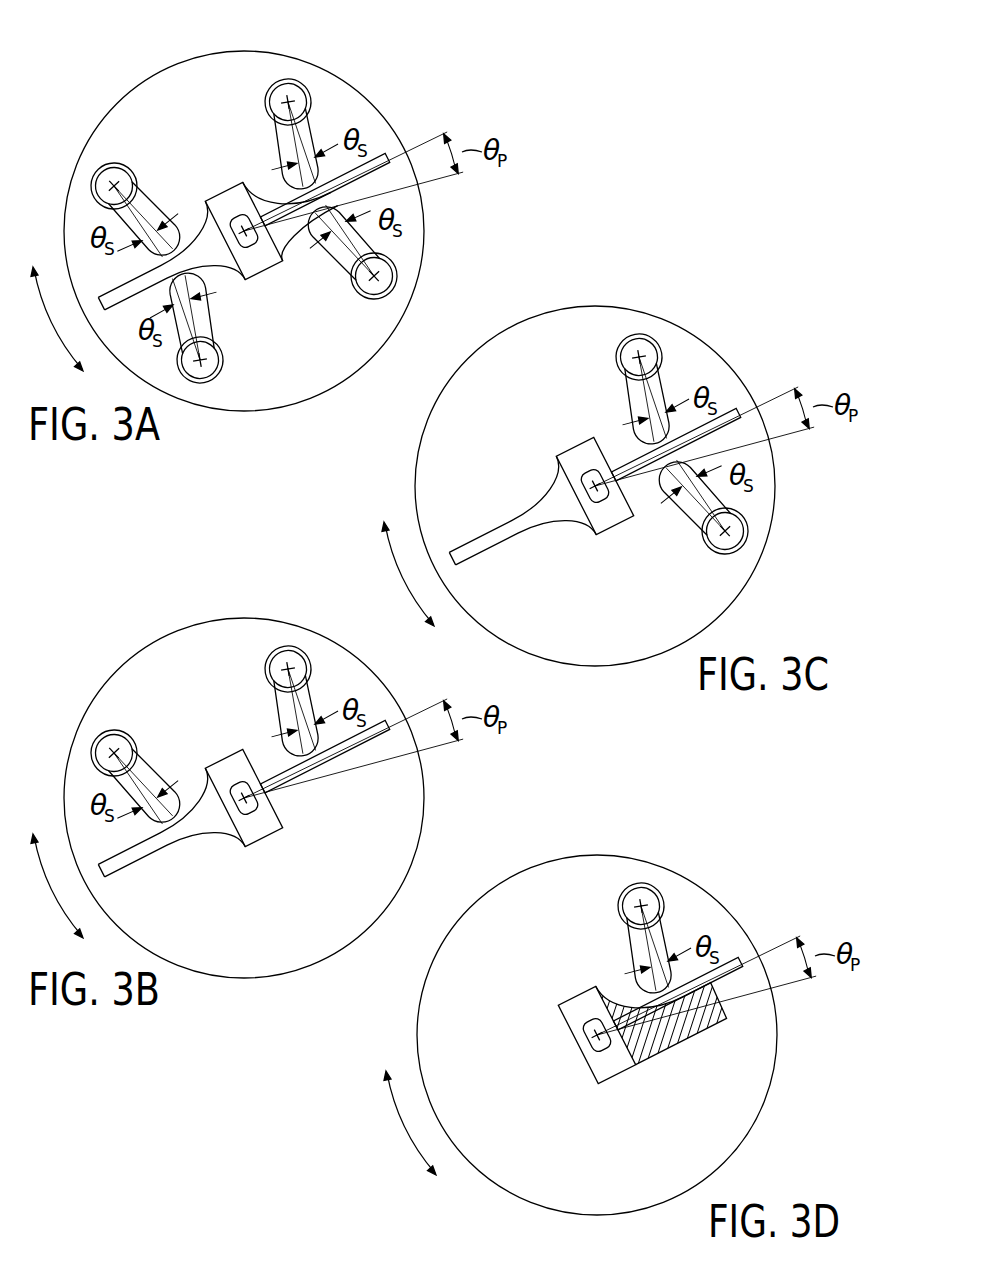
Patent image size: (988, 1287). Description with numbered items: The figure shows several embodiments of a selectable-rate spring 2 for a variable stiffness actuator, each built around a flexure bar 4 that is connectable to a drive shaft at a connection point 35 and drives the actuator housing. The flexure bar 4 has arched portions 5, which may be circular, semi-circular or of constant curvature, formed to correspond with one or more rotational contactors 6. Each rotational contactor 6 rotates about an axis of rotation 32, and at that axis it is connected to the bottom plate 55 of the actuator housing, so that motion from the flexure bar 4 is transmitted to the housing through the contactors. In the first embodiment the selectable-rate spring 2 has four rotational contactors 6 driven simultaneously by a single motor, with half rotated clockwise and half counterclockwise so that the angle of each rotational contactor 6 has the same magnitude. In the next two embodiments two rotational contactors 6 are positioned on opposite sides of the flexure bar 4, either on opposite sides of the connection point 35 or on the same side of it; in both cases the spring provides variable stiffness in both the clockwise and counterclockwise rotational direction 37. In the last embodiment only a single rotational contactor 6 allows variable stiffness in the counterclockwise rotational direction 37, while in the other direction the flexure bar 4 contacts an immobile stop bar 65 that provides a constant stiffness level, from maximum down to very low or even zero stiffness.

In FIG. 3A, the selectable-rate spring 2 is at (425, 49).
In FIG. 3B, the selectable-rate spring 2 is at (91, 576).
In FIG. 3C, the selectable-rate spring 2 is at (775, 272).
In FIG. 3D, the selectable-rate spring 2 is at (790, 852).
In FIG. 3A, the flexure bar 4 is at (336, 185).
In FIG. 3B, the flexure bar 4 is at (273, 784).
In FIG. 3C, the flexure bar 4 is at (624, 472).
In FIG. 3D, the flexure bar 4 is at (678, 989).
In FIG. 3A, the arched portion 5 is at (214, 232).
In FIG. 3A, the rotational contactor 6 is at (273, 200).
In FIG. 3B, the rotational contactor 6 is at (213, 741).
In FIG. 3C, the rotational contactor 6 is at (663, 466).
In FIG. 3D, the rotational contactor 6 is at (630, 948).
In FIG. 3A, the axis of rotation 32 is at (247, 207).
In FIG. 3B, the axis of rotation 32 is at (170, 679).
In FIG. 3C, the axis of rotation 32 is at (715, 419).
In FIG. 3D, the axis of rotation 32 is at (649, 877).
In FIG. 3A, the connection point 35 is at (266, 276).
In FIG. 3B, the connection point 35 is at (260, 839).
In FIG. 3C, the connection point 35 is at (611, 524).
In FIG. 3D, the connection point 35 is at (570, 1053).
In FIG. 3A, the rotational direction 37 is at (50, 319).
In FIG. 3B, the rotational direction 37 is at (50, 886).
In FIG. 3C, the rotational direction 37 is at (401, 574).
In FIG. 3D, the rotational direction 37 is at (403, 1123).
In FIG. 3A, the bottom plate 55 is at (69, 141).
In FIG. 3B, the bottom plate 55 is at (244, 826).
In FIG. 3C, the bottom plate 55 is at (609, 486).
In FIG. 3D, the bottom plate 55 is at (618, 1035).
In FIG. 3D, the stop bar 65 is at (657, 1013).